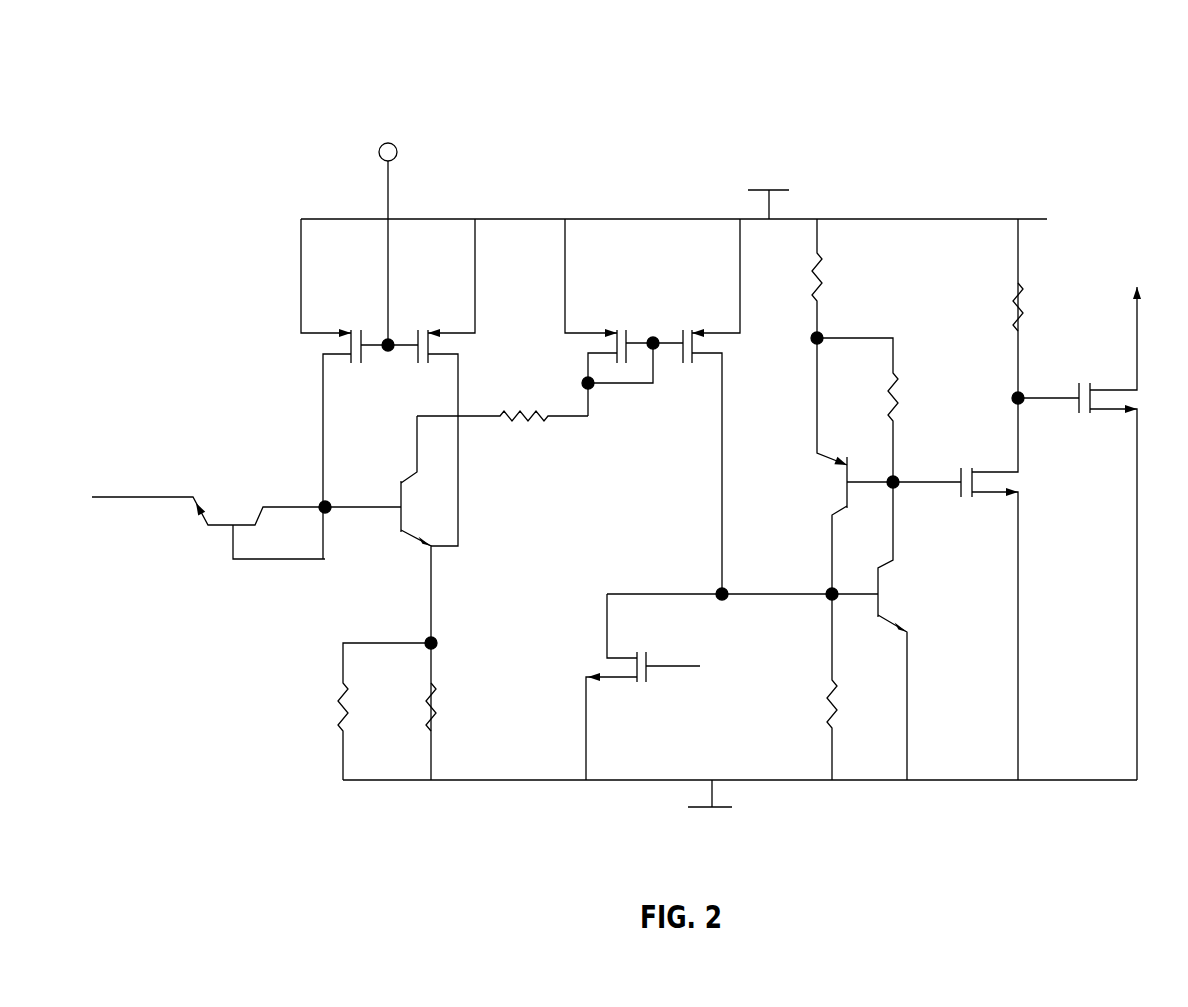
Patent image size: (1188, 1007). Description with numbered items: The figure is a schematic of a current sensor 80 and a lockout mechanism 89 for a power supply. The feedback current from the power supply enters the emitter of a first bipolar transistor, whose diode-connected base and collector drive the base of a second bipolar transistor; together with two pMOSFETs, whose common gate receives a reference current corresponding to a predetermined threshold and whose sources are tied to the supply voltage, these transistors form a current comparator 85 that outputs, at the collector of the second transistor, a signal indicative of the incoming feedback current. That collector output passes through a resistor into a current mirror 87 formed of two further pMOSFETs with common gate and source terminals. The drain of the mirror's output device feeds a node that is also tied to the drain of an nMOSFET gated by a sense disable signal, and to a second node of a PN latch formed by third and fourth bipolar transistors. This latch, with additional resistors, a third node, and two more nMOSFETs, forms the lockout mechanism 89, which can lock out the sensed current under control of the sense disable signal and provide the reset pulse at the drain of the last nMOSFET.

The current sensor 80 is at (662, 98).
The current comparator 85 is at (493, 533).
The current mirror 87 is at (630, 404).
The lockout mechanism 89 is at (800, 437).